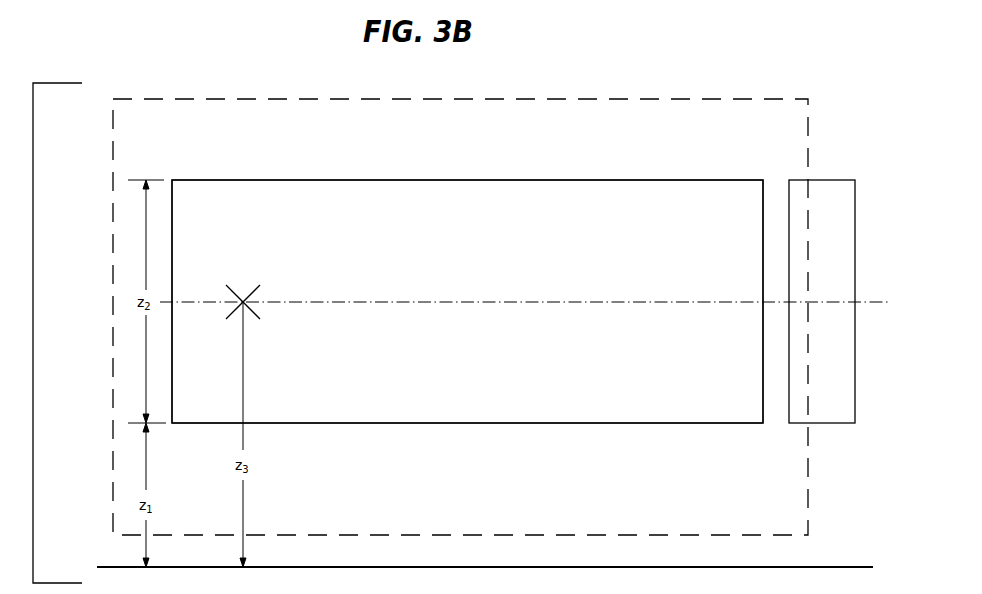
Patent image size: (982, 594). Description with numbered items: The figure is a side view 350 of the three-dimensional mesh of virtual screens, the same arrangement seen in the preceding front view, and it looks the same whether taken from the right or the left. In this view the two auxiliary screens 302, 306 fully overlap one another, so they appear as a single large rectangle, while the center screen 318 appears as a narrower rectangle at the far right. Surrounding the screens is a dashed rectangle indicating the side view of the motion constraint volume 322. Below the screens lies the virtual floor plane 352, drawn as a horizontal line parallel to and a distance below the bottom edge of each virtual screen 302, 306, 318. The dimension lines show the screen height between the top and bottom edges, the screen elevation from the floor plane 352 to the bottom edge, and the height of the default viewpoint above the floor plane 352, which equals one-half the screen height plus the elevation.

The side view 350 is at (48, 82).
The motion constraint volume 322 is at (597, 99).
The auxiliary screen 302 is at (420, 180).
The auxiliary screen 306 is at (467, 301).
The center screen 318 is at (822, 180).
The virtual floor plane 352 is at (388, 567).